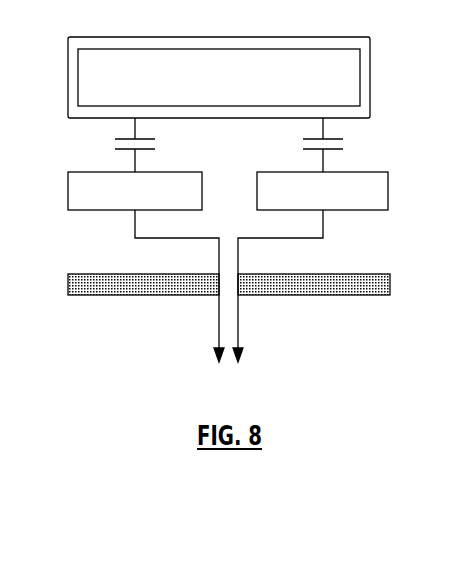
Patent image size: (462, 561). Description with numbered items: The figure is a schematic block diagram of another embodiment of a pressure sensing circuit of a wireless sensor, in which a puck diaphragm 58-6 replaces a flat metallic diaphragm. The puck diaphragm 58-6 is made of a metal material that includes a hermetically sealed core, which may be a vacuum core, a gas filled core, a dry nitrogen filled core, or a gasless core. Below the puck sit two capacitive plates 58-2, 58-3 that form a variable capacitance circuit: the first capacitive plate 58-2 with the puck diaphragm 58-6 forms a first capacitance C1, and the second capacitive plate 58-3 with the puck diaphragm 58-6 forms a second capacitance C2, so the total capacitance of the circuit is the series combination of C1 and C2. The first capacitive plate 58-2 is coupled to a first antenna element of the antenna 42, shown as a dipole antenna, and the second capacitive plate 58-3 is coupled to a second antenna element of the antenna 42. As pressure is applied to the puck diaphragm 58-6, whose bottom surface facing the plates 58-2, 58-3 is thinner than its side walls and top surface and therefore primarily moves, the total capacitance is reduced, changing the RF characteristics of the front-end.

The puck diaphragm 58-6 is at (313, 92).
The capacitive plate 58-2 is at (178, 203).
The capacitive plate 58-3 is at (367, 203).
The antenna 42 is at (437, 297).
The first capacitance C1 is at (112, 145).
The second capacitance C2 is at (345, 145).